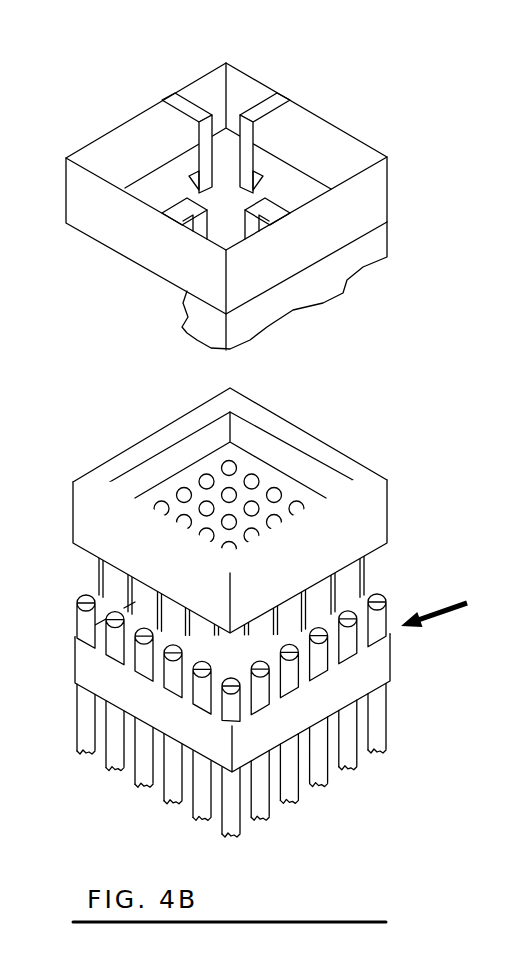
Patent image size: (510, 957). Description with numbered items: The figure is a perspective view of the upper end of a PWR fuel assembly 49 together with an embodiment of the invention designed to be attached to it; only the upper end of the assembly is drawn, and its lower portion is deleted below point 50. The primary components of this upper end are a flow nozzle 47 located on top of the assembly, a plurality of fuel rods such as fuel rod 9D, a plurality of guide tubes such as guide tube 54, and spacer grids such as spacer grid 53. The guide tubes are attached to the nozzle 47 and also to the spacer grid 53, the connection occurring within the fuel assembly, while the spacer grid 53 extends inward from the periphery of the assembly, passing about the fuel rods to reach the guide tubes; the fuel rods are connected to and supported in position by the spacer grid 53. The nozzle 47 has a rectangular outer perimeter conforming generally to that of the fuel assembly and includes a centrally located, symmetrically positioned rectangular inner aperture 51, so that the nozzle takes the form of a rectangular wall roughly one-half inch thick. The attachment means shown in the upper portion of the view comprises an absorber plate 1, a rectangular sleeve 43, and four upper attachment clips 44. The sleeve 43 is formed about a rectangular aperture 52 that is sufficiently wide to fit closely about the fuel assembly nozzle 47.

The absorber plate 1 is at (368, 248).
The rectangular sleeve 43 is at (358, 197).
The upper attachment clips 44 is at (180, 102).
The rectangular aperture 52 is at (113, 153).
The flow nozzle 47 is at (363, 525).
The rectangular inner aperture 51 is at (192, 442).
The guide tube 54 is at (330, 587).
The spacer grid 53 is at (390, 658).
The fuel rod 9D is at (378, 717).
The point below which lower portion is deleted 50 is at (363, 772).
The PWR fuel assembly 49 is at (451, 608).